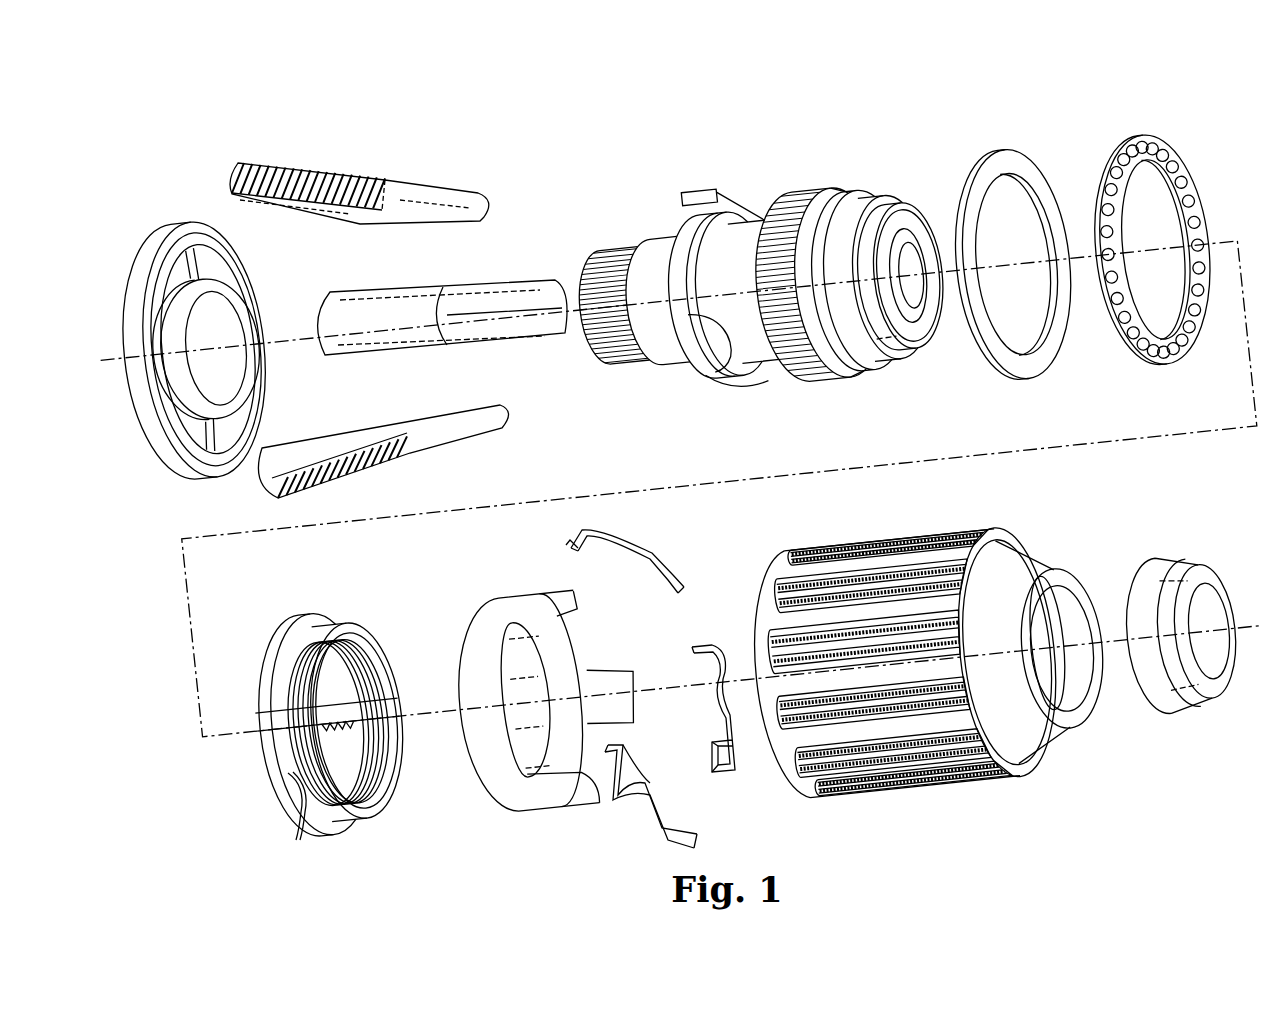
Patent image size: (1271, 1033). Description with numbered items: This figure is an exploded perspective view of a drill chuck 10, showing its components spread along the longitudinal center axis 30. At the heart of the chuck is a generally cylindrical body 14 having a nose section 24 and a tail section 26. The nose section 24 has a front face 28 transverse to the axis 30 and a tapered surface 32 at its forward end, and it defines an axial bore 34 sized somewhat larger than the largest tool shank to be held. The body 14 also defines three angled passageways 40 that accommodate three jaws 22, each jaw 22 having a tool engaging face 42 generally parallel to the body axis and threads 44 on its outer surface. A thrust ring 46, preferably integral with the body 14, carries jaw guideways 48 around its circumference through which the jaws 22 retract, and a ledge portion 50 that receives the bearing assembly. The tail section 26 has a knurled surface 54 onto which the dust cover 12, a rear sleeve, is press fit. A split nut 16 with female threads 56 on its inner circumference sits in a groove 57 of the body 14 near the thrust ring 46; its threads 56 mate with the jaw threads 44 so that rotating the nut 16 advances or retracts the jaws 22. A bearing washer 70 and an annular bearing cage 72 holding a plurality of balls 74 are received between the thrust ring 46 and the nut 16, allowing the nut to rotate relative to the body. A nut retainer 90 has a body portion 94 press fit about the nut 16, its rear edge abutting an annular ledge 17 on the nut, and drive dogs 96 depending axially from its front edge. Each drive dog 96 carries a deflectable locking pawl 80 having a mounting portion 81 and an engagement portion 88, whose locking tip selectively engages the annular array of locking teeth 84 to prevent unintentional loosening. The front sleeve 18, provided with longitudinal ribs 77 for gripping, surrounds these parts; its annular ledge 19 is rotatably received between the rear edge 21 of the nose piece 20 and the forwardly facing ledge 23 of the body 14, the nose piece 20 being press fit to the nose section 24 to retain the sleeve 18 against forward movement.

The chuck 10 is at (692, 137).
The dust cover 12 is at (163, 204).
The body 14 is at (765, 171).
The nut 16 is at (377, 836).
The annular ledge 17 is at (299, 840).
The front sleeve 18 is at (958, 806).
The annular ledge 19 is at (1045, 612).
The nose piece 20 is at (1201, 720).
The rear edge 21 is at (1138, 580).
The jaws 22 is at (400, 186).
The forwardly facing ledge 23 is at (820, 208).
The nose section 24 is at (882, 355).
The tail section 26 is at (653, 362).
The front face 28 is at (910, 222).
The longitudinal center axis 30 is at (1238, 237).
The tapered surface 32 is at (893, 203).
The axial bore 34 is at (913, 292).
The passageways 40 is at (724, 222).
The tool engaging face 42 is at (505, 303).
The threads 44 is at (345, 183).
The thrust ring 46 is at (672, 228).
The jaw guideways 48 is at (690, 382).
The ledge portion 50 is at (706, 340).
The knurled surface 54 is at (612, 245).
The female threads 56 is at (355, 665).
The groove 57 is at (770, 378).
The bearing washer 70 is at (1052, 350).
The bearing cage 72 is at (1153, 140).
The balls 74 is at (1185, 350).
The longitudinal ribs 77 is at (910, 535).
The locking pawl 80 is at (655, 538).
The mounting portion 81 is at (683, 572).
The locking teeth 84 is at (797, 194).
The engagement portion 88 is at (590, 548).
The nut retainer 90 is at (515, 823).
The body portion 94 is at (487, 652).
The drive dogs 96 is at (550, 610).